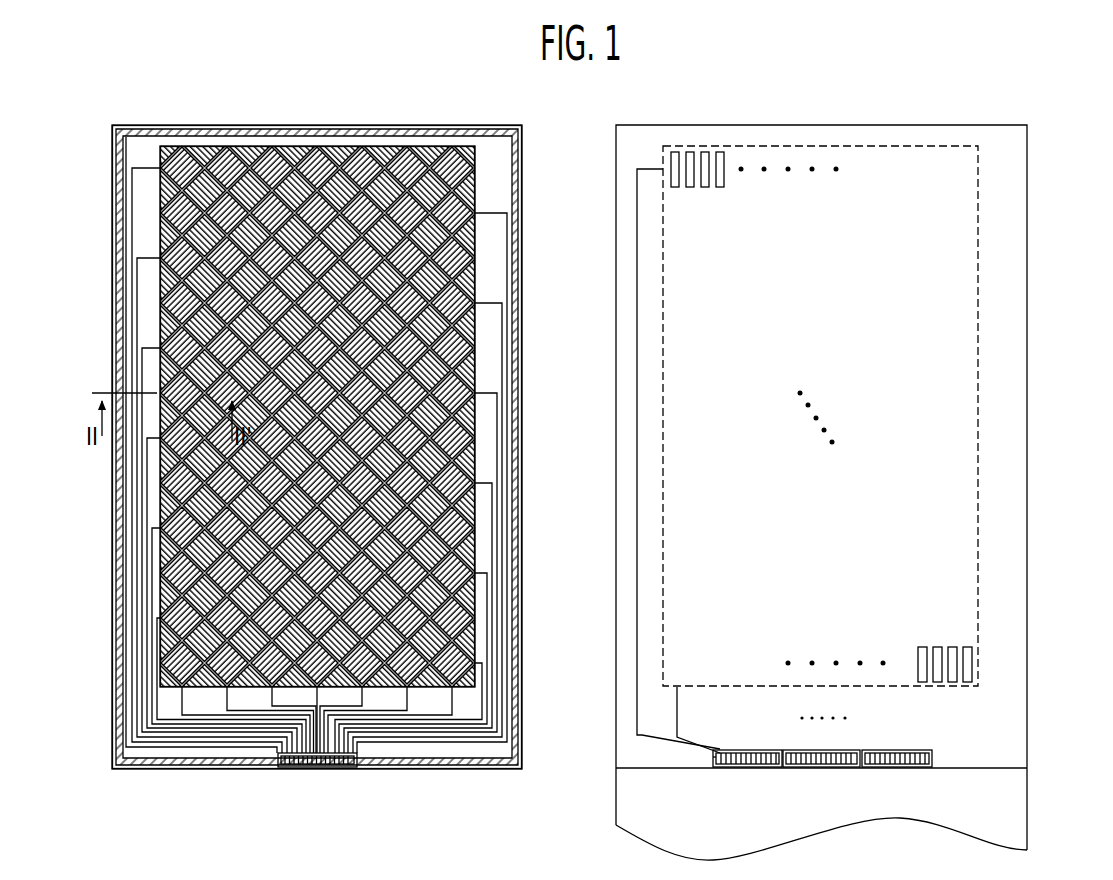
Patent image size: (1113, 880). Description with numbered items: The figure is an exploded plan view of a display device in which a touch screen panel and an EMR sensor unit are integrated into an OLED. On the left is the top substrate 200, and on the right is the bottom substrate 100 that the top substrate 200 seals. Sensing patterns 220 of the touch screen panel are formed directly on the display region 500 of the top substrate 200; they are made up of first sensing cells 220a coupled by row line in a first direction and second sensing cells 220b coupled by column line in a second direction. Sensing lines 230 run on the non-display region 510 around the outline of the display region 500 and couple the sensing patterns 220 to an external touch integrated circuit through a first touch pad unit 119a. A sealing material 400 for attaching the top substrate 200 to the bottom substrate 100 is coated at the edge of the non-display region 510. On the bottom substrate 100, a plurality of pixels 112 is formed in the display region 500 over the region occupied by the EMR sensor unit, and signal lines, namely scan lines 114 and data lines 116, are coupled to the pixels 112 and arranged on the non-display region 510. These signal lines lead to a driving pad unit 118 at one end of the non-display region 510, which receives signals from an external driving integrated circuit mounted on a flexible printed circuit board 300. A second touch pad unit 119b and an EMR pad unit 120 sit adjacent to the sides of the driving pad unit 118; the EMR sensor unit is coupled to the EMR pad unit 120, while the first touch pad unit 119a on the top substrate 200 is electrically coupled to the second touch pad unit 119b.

The bottom substrate 100 is at (814, 125).
The pixels 112 is at (704, 152).
The scan lines 114 is at (637, 712).
The data lines 116 is at (677, 713).
The driving pad unit 118 is at (715, 756).
The first touch pad unit 119a is at (363, 768).
The second touch pad unit 119b is at (776, 766).
The EMR pad unit 120 is at (932, 757).
The top substrate 200 is at (399, 125).
The sensing patterns 220 is at (317, 377).
The first sensing cells 220a is at (158, 86).
The second sensing cells 220b is at (182, 182).
The sensing lines 230 is at (132, 221).
The flexible printed circuit board 300 is at (616, 805).
The sealing material 400 is at (519, 445).
The display region 500 is at (482, 263).
The non-display region 510 is at (496, 166).